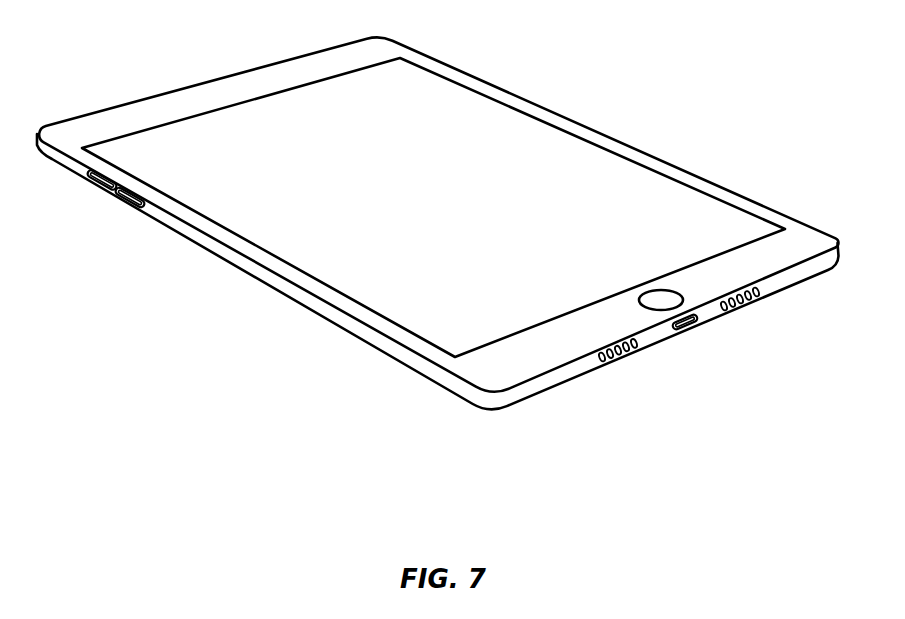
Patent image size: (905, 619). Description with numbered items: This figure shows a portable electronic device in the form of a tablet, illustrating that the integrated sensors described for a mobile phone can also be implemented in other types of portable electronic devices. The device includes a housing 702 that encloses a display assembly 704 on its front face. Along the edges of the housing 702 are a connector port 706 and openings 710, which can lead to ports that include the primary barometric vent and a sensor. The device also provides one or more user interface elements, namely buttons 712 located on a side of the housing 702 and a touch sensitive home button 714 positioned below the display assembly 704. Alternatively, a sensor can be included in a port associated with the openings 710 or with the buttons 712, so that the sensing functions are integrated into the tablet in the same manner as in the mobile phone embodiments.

The housing 702 is at (320, 315).
The display assembly 704 is at (502, 100).
The connector port 706 is at (678, 327).
The openings 710 is at (602, 362).
The buttons 712 is at (138, 204).
The touch sensitive home button 714 is at (652, 290).